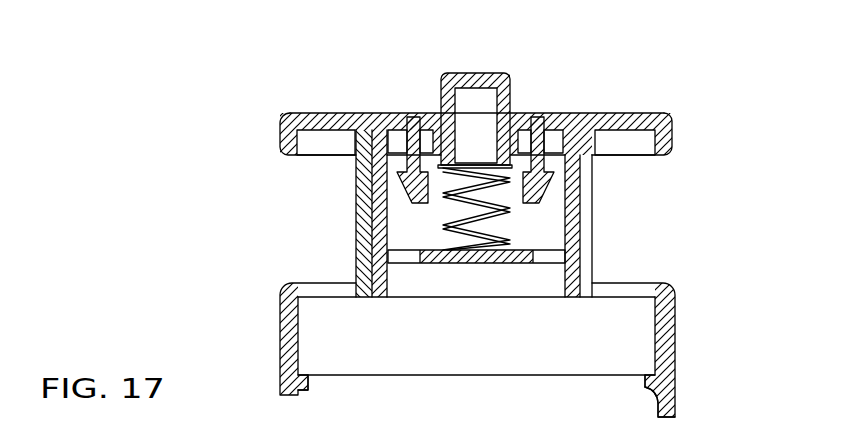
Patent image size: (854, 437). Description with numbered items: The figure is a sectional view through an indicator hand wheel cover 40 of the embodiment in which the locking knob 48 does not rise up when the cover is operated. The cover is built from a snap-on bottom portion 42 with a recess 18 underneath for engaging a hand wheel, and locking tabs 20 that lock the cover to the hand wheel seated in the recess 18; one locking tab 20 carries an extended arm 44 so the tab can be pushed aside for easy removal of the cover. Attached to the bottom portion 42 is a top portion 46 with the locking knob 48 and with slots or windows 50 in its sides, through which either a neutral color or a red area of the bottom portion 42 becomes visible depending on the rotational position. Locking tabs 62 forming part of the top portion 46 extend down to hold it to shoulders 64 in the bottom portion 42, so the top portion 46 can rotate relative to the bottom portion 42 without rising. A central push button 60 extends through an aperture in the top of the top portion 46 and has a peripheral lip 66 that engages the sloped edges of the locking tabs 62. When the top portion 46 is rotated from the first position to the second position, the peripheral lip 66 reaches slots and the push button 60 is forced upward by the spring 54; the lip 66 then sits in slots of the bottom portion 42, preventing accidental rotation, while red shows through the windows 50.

The indicator hand wheel cover 40 is at (369, 97).
The locking knob 48 is at (668, 123).
The central push button 60 is at (490, 79).
The shoulders 64 is at (397, 162).
The locking tabs 62 is at (545, 177).
The top portion 46 is at (356, 196).
The slots or windows 50 is at (592, 212).
The peripheral lip 66 is at (415, 204).
The spring 54 is at (505, 212).
The bottom portion 42 is at (281, 340).
The recess 18 is at (455, 358).
The locking tabs 20 is at (308, 389).
The extended arm 44 is at (676, 409).